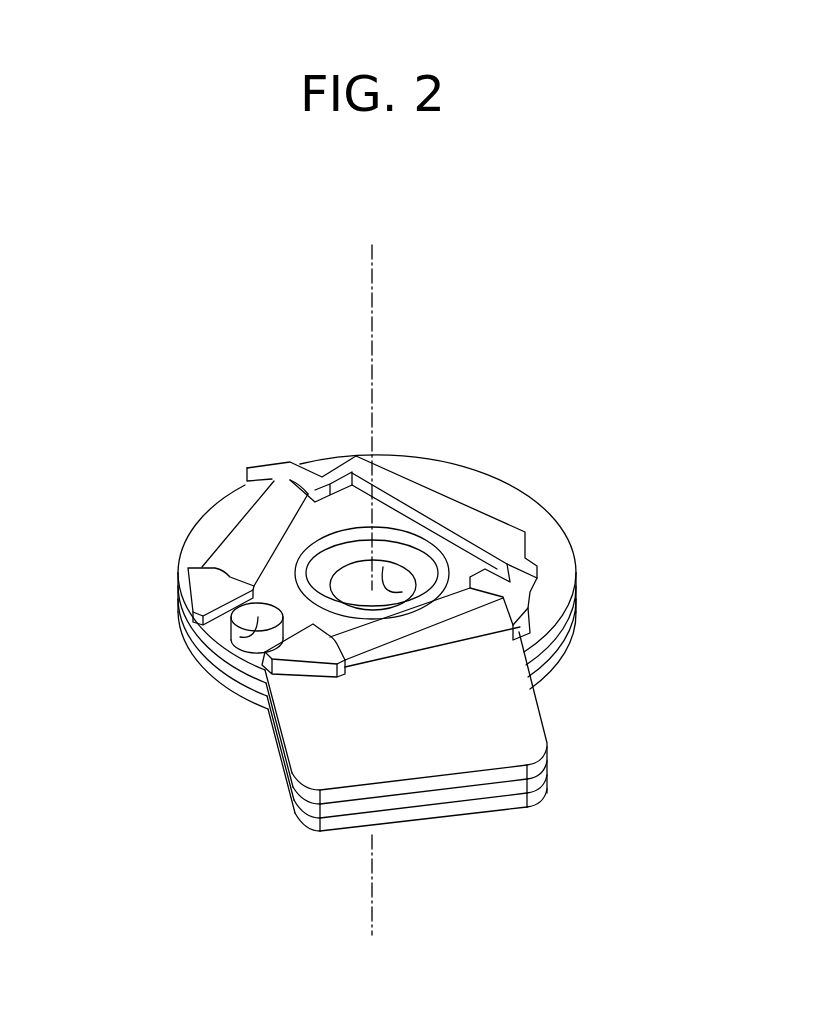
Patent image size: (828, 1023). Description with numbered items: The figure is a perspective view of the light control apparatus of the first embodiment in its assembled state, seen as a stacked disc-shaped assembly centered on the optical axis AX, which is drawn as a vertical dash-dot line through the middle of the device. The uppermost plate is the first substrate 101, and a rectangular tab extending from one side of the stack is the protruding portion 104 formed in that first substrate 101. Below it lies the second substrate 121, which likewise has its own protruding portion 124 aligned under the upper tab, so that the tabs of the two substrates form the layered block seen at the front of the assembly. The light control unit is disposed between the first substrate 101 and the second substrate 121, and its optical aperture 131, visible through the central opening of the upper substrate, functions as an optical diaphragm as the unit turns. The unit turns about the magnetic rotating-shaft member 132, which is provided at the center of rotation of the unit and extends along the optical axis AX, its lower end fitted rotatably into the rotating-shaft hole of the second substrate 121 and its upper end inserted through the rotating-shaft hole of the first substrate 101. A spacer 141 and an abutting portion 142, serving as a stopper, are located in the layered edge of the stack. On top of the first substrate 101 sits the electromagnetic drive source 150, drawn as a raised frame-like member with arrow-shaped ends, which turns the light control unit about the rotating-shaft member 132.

The optical axis AX is at (372, 320).
The first substrate 101 is at (500, 483).
The protruding portion 104 is at (502, 727).
The second substrate 121 is at (247, 702).
The protruding portion 124 is at (305, 819).
The optical aperture 131 is at (447, 582).
The rotating-shaft member 132 is at (227, 643).
The spacer 141 is at (177, 613).
The abutting portion 142 is at (475, 790).
The electromagnetic drive source 150 is at (467, 490).